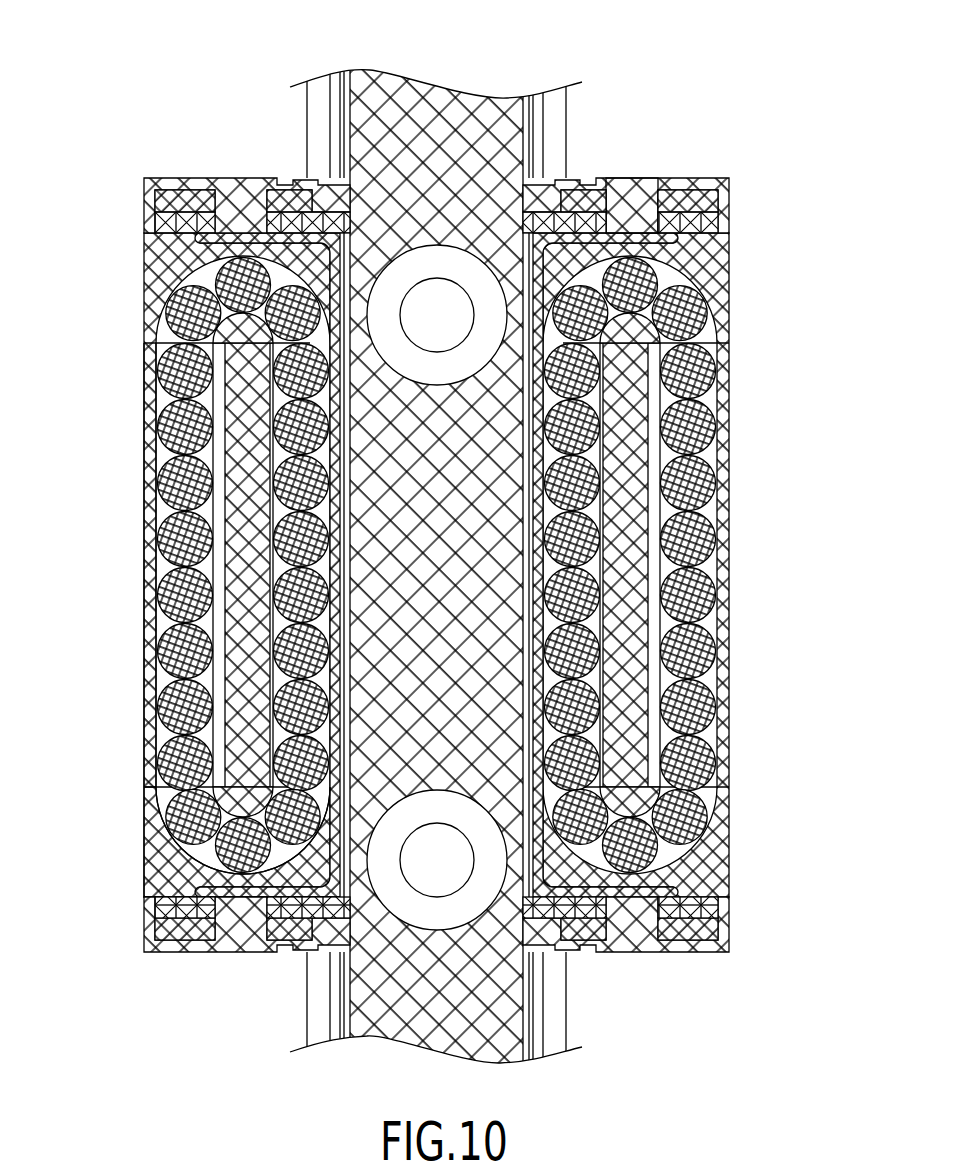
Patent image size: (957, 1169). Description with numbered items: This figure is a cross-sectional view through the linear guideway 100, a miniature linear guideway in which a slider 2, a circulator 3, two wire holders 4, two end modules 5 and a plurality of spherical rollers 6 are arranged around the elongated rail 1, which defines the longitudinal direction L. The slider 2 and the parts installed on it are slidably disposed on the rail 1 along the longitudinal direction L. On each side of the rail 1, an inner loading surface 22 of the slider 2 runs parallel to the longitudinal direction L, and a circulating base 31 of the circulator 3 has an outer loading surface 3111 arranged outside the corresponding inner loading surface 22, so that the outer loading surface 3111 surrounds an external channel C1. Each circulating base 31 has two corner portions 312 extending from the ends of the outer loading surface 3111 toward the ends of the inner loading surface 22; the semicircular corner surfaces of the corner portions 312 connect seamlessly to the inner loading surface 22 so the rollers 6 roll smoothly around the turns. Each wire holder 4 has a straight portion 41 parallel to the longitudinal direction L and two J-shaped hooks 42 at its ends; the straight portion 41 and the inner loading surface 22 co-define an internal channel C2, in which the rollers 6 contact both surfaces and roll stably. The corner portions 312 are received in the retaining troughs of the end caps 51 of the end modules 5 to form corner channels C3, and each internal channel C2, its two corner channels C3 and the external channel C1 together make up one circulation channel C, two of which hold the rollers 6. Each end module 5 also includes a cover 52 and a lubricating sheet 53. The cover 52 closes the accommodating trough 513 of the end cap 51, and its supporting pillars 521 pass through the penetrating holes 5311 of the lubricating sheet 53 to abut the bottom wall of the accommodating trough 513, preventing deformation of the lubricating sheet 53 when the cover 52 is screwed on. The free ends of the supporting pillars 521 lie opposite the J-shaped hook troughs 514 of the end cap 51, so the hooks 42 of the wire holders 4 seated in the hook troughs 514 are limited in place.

The linear guideway 100 is at (195, 24).
The elongated rail 1 is at (572, 1000).
The slider 2 is at (630, 545).
The circulator 3 is at (742, 410).
The wire holder 4 is at (718, 548).
The end module 5 is at (432, 529).
The roller 6 is at (712, 461).
The inner loading surface 22 is at (255, 510).
The circulating base 31 is at (222, 470).
The straight portion 41 is at (656, 368).
The J-shaped hook 42 is at (646, 306).
The end cap 51 is at (187, 565).
The cover 52 is at (181, 178).
The lubricating sheet 53 is at (160, 222).
The corner portion 312 is at (167, 806).
The accommodating trough 513 is at (728, 223).
The J-shaped hook trough 514 is at (678, 240).
The supporting pillar 521 is at (625, 200).
The outer loading surface 3111 is at (152, 669).
The penetrating hole 5311 is at (665, 211).
The circulation channel C is at (693, 766).
The external channel C1 is at (718, 680).
The internal channel C2 is at (600, 730).
The corner channel C3 is at (727, 812).
The longitudinal direction L is at (848, 510).